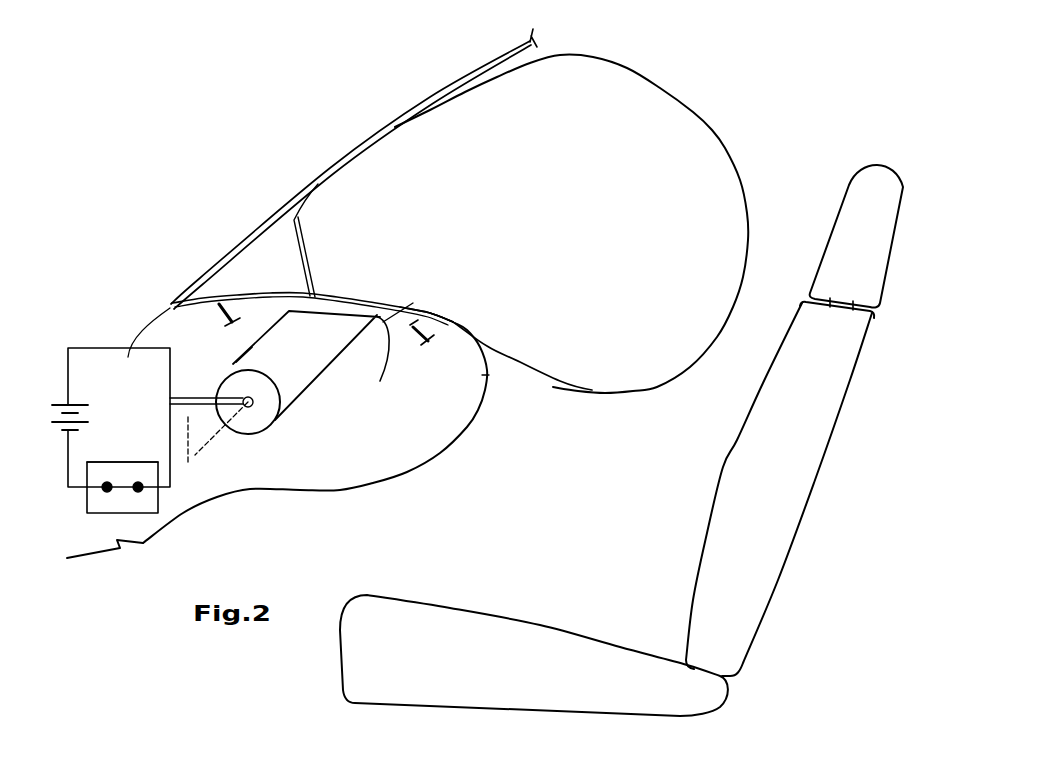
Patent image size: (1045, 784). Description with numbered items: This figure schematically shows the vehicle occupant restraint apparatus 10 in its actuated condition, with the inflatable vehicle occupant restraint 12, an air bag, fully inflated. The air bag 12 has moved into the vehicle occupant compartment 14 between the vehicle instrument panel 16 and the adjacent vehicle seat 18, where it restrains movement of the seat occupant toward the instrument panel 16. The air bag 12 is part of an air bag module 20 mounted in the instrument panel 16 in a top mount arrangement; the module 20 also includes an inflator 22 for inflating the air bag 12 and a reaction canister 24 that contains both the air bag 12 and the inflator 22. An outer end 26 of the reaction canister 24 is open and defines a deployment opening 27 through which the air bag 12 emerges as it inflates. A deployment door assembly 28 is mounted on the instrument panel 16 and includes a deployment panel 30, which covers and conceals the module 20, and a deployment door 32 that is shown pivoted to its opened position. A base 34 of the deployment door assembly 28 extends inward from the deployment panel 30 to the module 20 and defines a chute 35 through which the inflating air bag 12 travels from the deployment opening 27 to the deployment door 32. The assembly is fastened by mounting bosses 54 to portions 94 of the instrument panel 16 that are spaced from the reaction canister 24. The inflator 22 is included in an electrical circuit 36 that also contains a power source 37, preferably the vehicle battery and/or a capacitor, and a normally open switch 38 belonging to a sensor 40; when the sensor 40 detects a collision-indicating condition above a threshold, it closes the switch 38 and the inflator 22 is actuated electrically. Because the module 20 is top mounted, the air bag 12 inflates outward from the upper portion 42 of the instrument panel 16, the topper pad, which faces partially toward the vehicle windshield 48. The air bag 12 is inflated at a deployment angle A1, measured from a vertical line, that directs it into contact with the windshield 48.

The vehicle occupant restraint apparatus 10 is at (138, 278).
The inflatable vehicle occupant restraint 12 is at (725, 148).
The vehicle occupant compartment 14 is at (798, 242).
The vehicle instrument panel 16 is at (487, 397).
The vehicle seat 18 is at (737, 430).
The air bag module 20 is at (299, 408).
The inflator 22 is at (239, 432).
The reaction canister 24 is at (242, 357).
The outer end 26 is at (378, 381).
The deployment opening 27 is at (345, 316).
The deployment door assembly 28 is at (440, 307).
The deployment panel 30 is at (413, 303).
The deployment door 32 is at (291, 234).
The base 34 is at (288, 311).
The chute 35 is at (319, 304).
The electrical circuit 36 is at (78, 347).
The power source 37 is at (78, 405).
The normally open switch 38 is at (123, 493).
The sensor 40 is at (103, 462).
The upper portion 42 is at (490, 356).
The vehicle windshield 48 is at (222, 255).
The mounting boss 54 is at (236, 303).
The portion of the instrument panel 94 is at (215, 306).
The deployment angle A1 is at (190, 427).